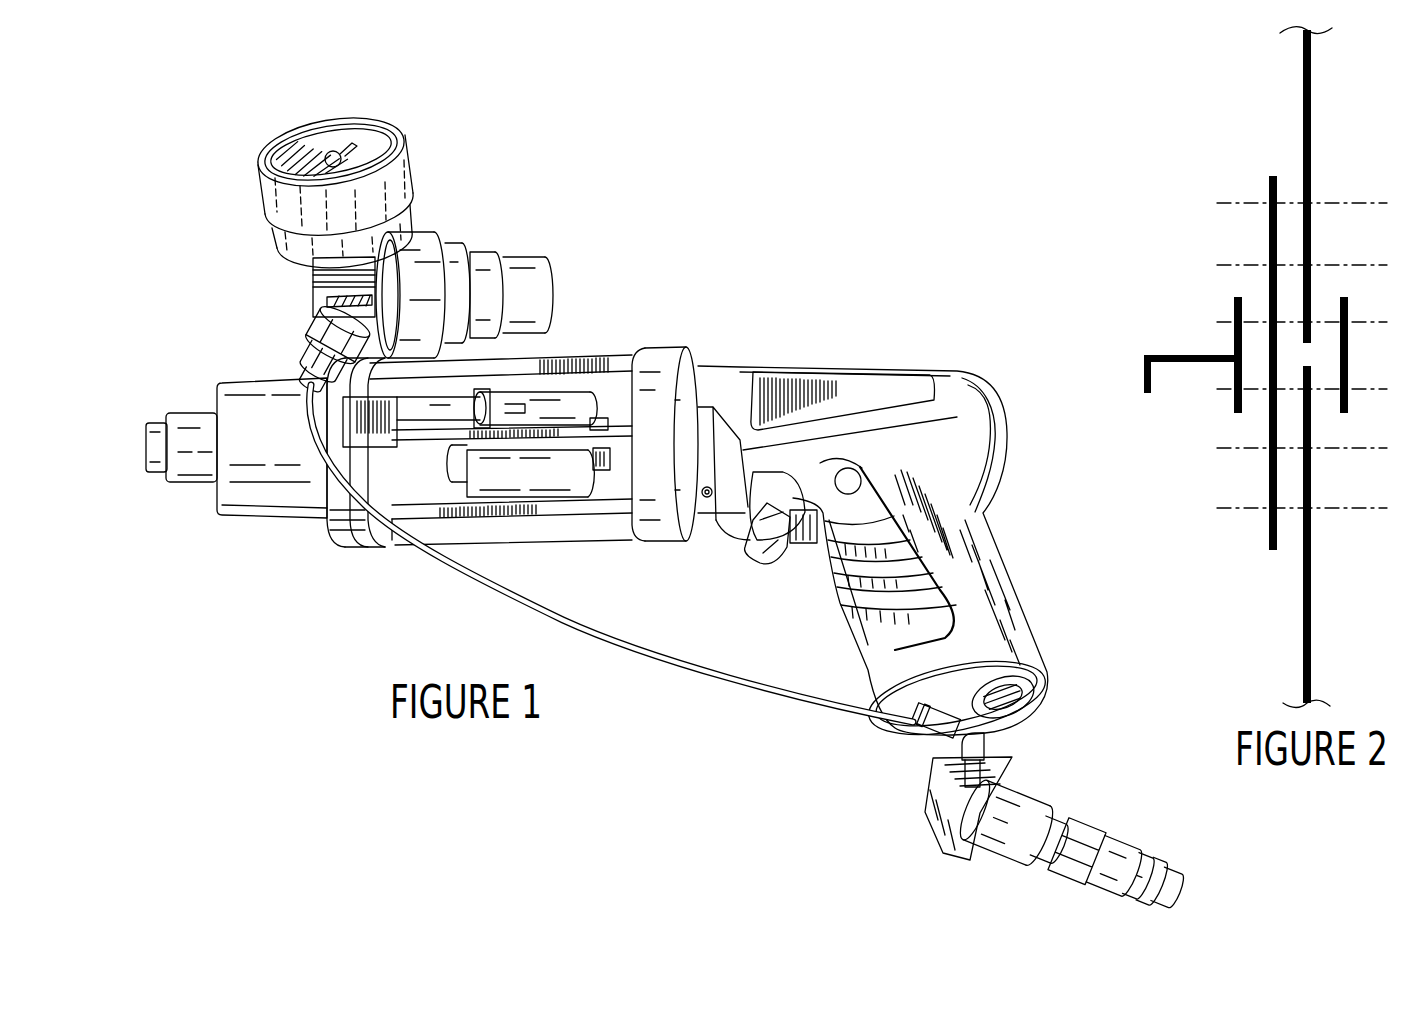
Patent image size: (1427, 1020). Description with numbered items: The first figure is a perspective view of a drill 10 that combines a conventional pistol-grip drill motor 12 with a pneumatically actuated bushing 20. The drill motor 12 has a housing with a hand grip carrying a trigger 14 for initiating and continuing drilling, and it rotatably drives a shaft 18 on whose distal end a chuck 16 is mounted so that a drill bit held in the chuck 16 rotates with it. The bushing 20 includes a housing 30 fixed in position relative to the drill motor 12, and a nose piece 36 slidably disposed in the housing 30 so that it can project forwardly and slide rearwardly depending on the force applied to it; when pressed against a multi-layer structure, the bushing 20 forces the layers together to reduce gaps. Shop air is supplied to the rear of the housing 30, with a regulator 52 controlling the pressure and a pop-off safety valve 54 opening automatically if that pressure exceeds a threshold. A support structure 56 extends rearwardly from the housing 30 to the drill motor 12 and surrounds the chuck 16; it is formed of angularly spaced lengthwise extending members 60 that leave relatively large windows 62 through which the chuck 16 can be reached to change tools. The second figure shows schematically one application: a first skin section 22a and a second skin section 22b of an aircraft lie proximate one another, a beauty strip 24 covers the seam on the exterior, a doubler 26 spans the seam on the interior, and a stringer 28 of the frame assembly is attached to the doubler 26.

In FIG. 1, the drill 10 is at (900, 292).
In FIG. 1, the drill motor 12 is at (937, 370).
In FIG. 1, the trigger 14 is at (757, 548).
In FIG. 1, the chuck 16 is at (543, 472).
In FIG. 1, the shaft 18 is at (600, 462).
In FIG. 1, the bushing 20 is at (347, 557).
In FIG. 2, the first skin section 22a is at (1311, 576).
In FIG. 2, the second skin section 22b is at (1311, 137).
In FIG. 2, the beauty strip 24 is at (1349, 348).
In FIG. 2, the doubler 26 is at (1270, 530).
In FIG. 2, the stringer 28 is at (1179, 355).
In FIG. 1, the housing 30 is at (257, 385).
In FIG. 1, the nose piece 36 is at (185, 478).
In FIG. 1, the regulator 52 is at (450, 247).
In FIG. 1, the safety valve 54 is at (458, 403).
In FIG. 1, the support structure 56 is at (492, 512).
In FIG. 1, the lengthwise extending members 60 is at (613, 367).
In FIG. 1, the windows 62 is at (452, 492).